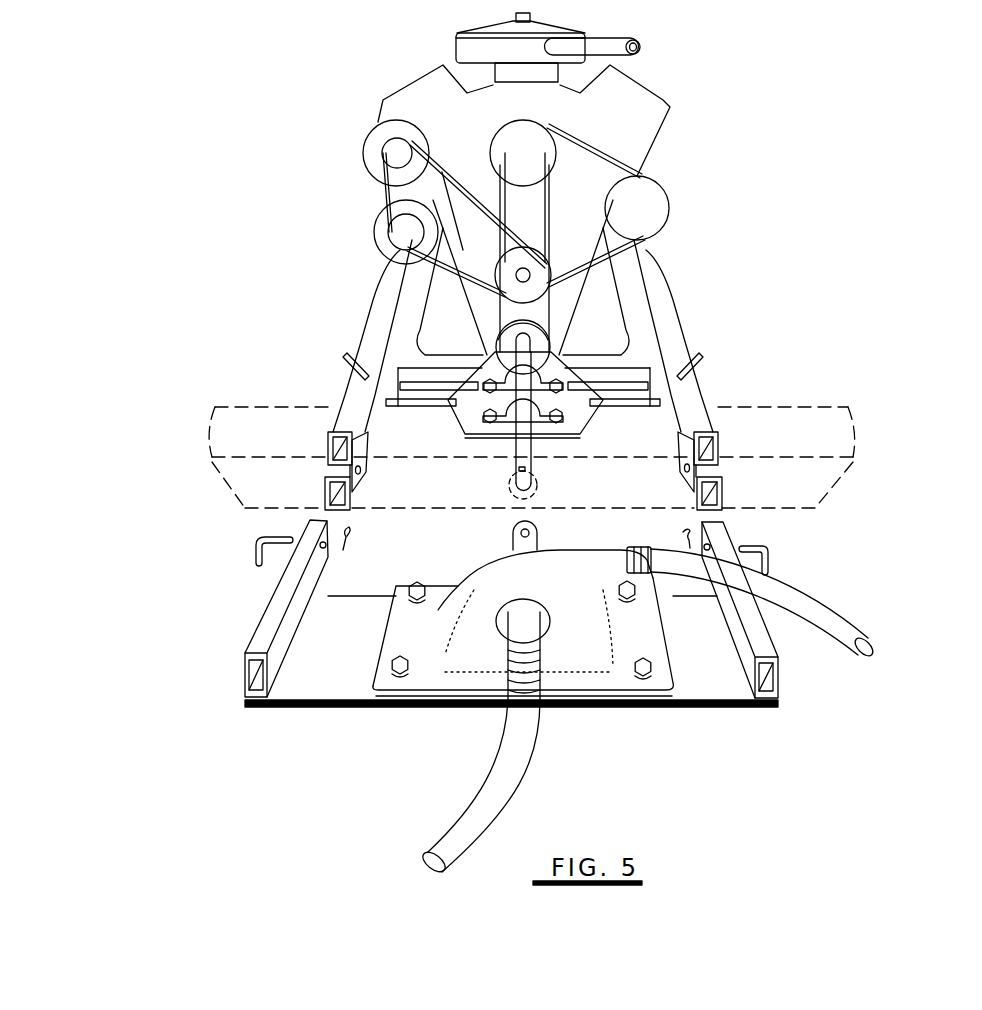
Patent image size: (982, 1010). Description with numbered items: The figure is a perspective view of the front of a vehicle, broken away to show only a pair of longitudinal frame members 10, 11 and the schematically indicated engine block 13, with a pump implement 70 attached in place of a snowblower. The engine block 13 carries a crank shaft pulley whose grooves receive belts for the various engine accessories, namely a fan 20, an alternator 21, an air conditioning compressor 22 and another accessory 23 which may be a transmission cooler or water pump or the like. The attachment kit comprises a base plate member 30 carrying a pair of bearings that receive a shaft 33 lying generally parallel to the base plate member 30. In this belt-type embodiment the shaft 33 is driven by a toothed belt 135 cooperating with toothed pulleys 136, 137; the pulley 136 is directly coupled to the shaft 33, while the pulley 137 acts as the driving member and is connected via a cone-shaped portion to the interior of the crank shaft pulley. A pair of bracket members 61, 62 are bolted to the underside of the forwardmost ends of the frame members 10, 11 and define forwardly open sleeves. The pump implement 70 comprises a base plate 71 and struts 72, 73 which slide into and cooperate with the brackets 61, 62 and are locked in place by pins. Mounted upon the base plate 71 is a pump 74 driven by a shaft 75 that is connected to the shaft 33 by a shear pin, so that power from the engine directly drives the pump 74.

The longitudinal frame member 10 is at (382, 300).
The longitudinal frame member 11 is at (668, 300).
The engine block 13 is at (641, 98).
The fan 20 is at (518, 148).
The alternator 21 is at (390, 230).
The air conditioning compressor 22 is at (388, 152).
The accessory 23 is at (656, 208).
The base plate member 30 is at (590, 438).
The shaft 33 is at (526, 460).
The bracket member 61 is at (352, 512).
The bracket member 62 is at (722, 512).
The pump implement 70 is at (517, 646).
The base plate 71 is at (716, 677).
The strut 72 is at (282, 598).
The strut 73 is at (765, 637).
The pump 74 is at (548, 578).
The shaft 75 is at (511, 538).
The toothed belt 135 is at (553, 316).
The toothed pulley 136 is at (536, 348).
The toothed pulley 137 is at (532, 262).